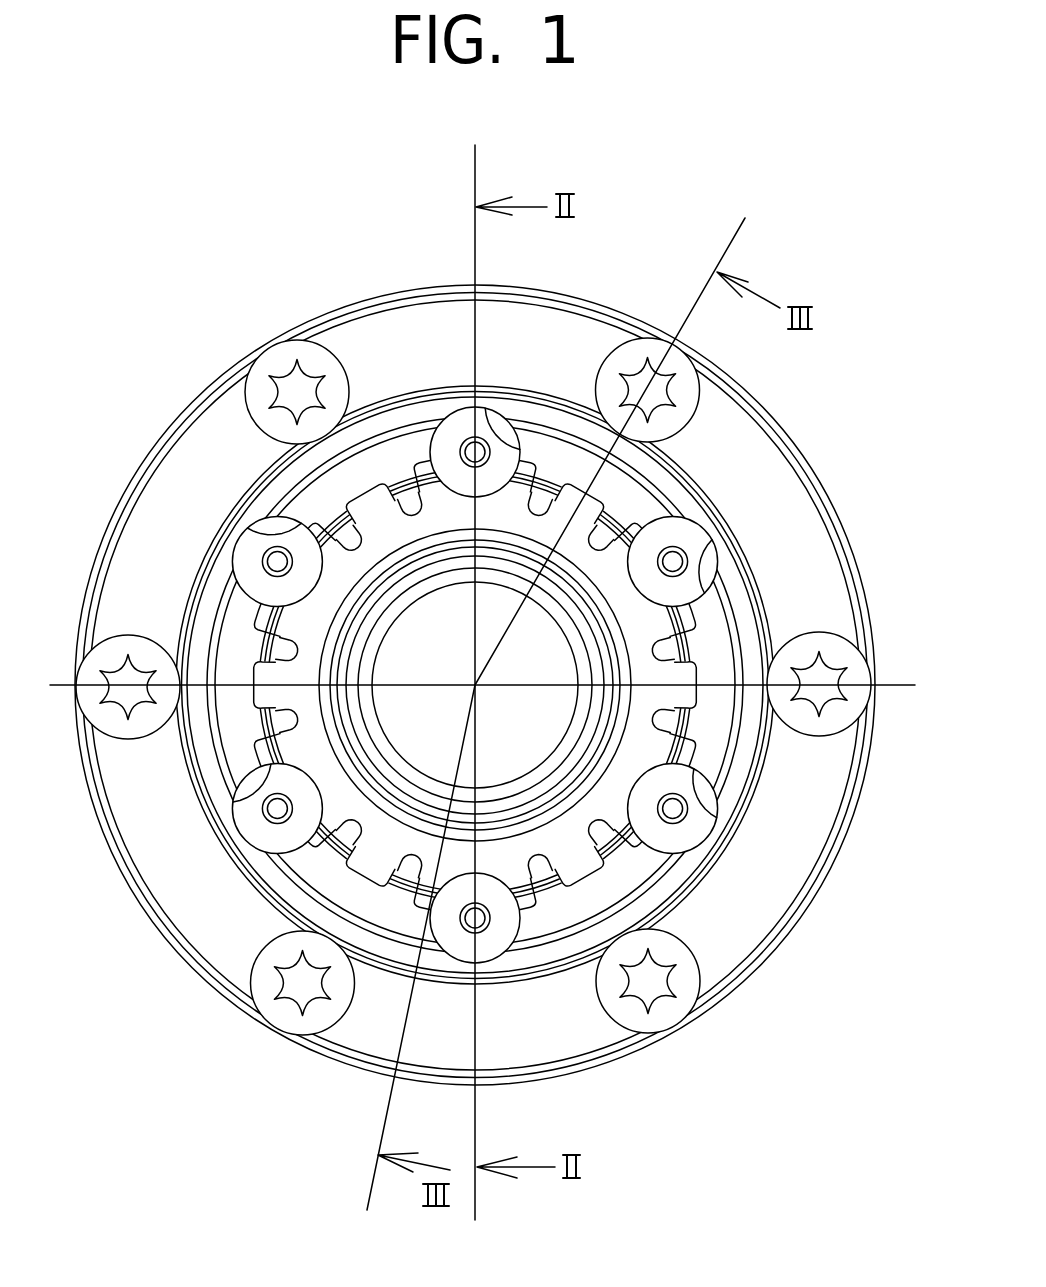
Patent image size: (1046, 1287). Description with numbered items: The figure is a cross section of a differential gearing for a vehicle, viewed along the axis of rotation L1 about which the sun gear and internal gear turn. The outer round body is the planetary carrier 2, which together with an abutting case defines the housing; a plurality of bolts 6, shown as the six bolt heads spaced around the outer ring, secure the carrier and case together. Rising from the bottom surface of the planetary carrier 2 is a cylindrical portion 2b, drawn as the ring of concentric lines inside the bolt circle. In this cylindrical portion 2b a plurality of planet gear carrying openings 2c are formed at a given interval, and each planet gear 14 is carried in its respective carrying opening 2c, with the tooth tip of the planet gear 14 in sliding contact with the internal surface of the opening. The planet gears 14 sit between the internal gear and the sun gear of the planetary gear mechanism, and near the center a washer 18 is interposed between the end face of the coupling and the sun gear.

The planetary carrier 2 is at (195, 470).
The cylindrical portion 2b is at (710, 630).
The planet gear carrying opening 2c is at (500, 412).
The bolt 6 is at (282, 352).
The planet gear 14 is at (450, 430).
The washer 18 is at (265, 696).
The axis of rotation L1 is at (474, 686).